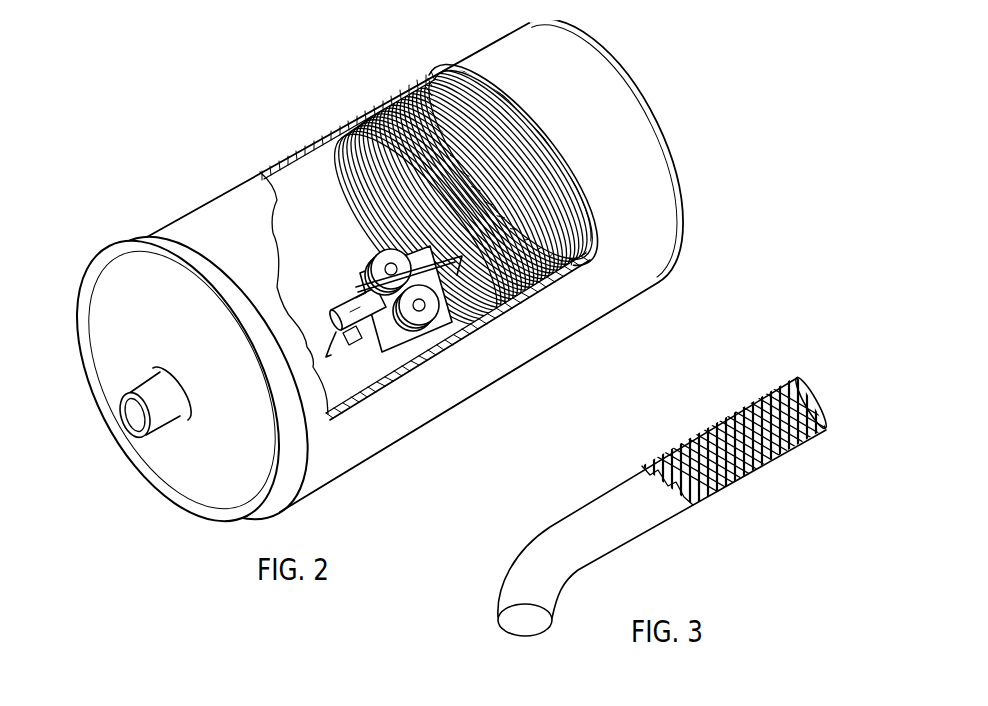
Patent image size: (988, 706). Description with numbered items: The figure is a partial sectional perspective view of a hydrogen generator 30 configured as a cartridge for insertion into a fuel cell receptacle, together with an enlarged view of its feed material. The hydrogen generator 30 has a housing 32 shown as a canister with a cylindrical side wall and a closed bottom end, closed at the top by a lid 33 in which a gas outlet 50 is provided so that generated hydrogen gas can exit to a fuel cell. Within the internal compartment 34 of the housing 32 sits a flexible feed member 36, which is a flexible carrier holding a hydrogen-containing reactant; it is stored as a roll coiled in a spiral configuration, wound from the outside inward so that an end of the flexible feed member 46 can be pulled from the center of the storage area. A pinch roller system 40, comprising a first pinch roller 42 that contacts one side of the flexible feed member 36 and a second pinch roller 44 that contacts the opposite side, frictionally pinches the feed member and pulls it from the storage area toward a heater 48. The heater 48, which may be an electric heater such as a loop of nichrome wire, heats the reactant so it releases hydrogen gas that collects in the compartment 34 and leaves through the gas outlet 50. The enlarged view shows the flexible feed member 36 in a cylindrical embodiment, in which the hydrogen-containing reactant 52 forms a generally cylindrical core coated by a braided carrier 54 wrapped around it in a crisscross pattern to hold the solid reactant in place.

In FIG. 2, the hydrogen generator 30 is at (217, 145).
In FIG. 2, the housing 32 is at (197, 223).
In FIG. 2, the lid 33 is at (197, 492).
In FIG. 2, the internal compartment 34 is at (296, 188).
In FIG. 2, the flexible feed member 36 is at (350, 187).
In FIG. 3, the flexible feed member 36 is at (600, 470).
In FIG. 2, the pinch roller system 40 is at (349, 254).
In FIG. 2, the first pinch roller 42 is at (370, 272).
In FIG. 2, the second pinch roller 44 is at (462, 340).
In FIG. 2, the end of the flexible feed member 46 is at (338, 353).
In FIG. 2, the heater 48 is at (352, 315).
In FIG. 2, the gas outlet 50 is at (137, 412).
In FIG. 3, the hydrogen-containing reactant 52 is at (538, 570).
In FIG. 3, the braided carrier 54 is at (790, 445).